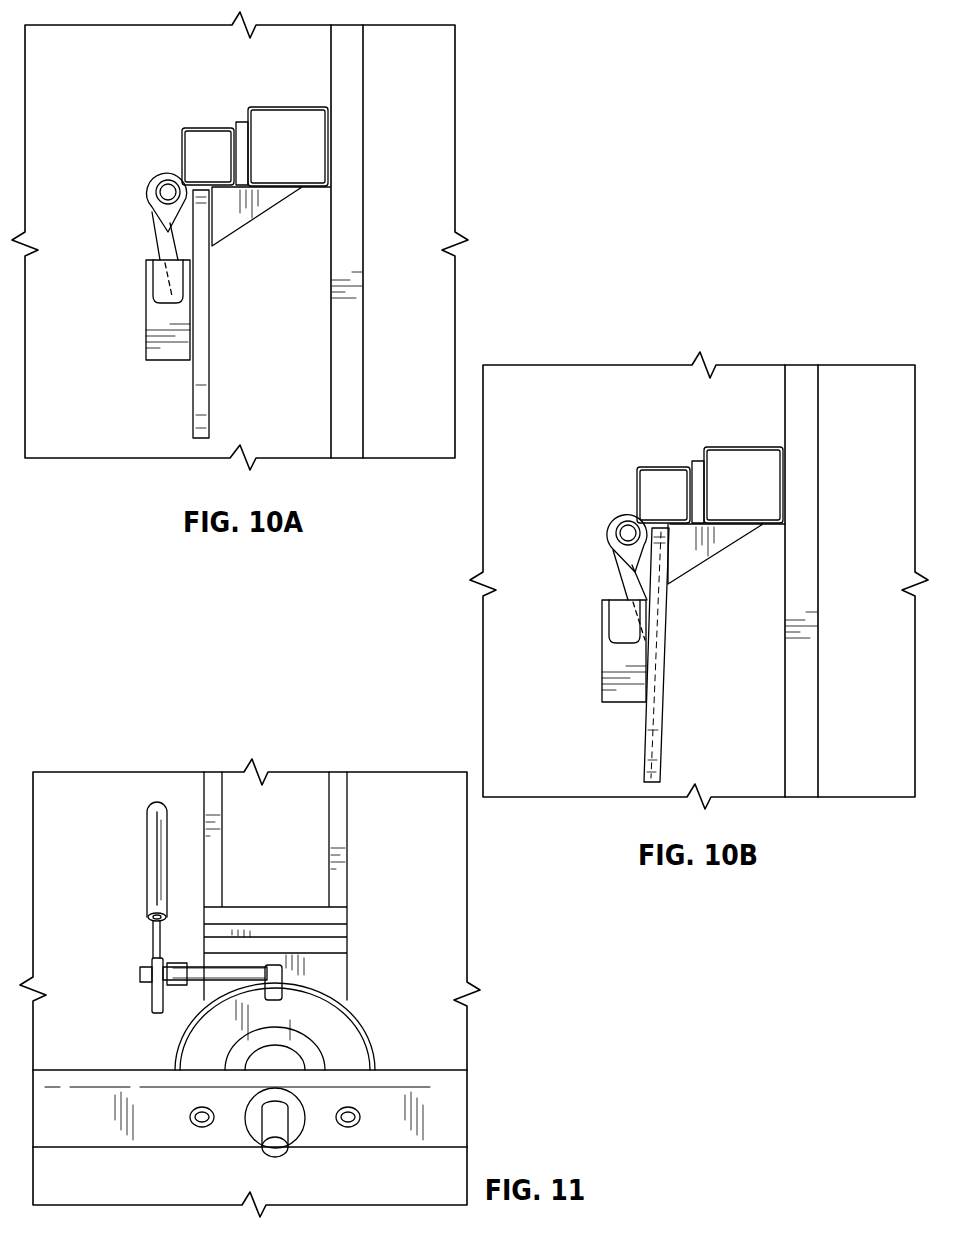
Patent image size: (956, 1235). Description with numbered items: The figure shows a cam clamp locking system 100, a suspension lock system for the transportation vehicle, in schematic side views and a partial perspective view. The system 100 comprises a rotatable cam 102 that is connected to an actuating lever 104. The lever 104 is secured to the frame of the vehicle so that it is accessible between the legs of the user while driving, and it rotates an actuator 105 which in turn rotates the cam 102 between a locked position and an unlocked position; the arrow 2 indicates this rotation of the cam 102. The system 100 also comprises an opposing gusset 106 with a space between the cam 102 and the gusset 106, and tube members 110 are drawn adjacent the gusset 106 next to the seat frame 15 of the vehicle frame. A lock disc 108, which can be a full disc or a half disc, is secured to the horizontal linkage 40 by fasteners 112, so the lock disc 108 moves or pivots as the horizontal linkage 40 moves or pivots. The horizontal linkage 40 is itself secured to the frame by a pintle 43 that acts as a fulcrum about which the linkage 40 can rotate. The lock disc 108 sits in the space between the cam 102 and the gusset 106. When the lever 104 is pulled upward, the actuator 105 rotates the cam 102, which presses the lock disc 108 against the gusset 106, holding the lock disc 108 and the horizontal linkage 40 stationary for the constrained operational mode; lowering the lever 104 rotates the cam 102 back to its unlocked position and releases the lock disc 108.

In FIG. 10B, the rotation direction arrow 2 is at (598, 545).
In FIG. 10A, the seat frame 15 is at (348, 92).
In FIG. 10B, the seat frame 15 is at (803, 430).
In FIG. 10A, the horizontal linkage 40 is at (146, 340).
In FIG. 10B, the horizontal linkage 40 is at (602, 677).
In FIG. 11, the horizontal linkage 40 is at (440, 1082).
In FIG. 11, the pintle 43 is at (283, 1155).
In FIG. 10A, the cam clamp locking system 100 is at (110, 226).
In FIG. 10B, the cam clamp locking system 100 is at (565, 505).
In FIG. 11, the cam clamp locking system 100 is at (413, 965).
In FIG. 10A, the cam 102 is at (150, 213).
In FIG. 10B, the cam 102 is at (612, 546).
In FIG. 11, the cam 102 is at (282, 976).
In FIG. 11, the actuating lever 104 is at (152, 827).
In FIG. 10A, the actuator 105 is at (148, 232).
In FIG. 10B, the actuator 105 is at (617, 580).
In FIG. 11, the actuator 105 is at (150, 990).
In FIG. 10A, the gusset 106 is at (230, 220).
In FIG. 10B, the gusset 106 is at (683, 562).
In FIG. 10A, the lock disc 108 is at (210, 295).
In FIG. 10B, the lock disc 108 is at (667, 658).
In FIG. 11, the lock disc 108 is at (355, 1044).
In FIG. 10A, the tube members 110 is at (266, 107).
In FIG. 10B, the tube members 110 is at (722, 447).
In FIG. 11, the fasteners 112 is at (352, 1118).